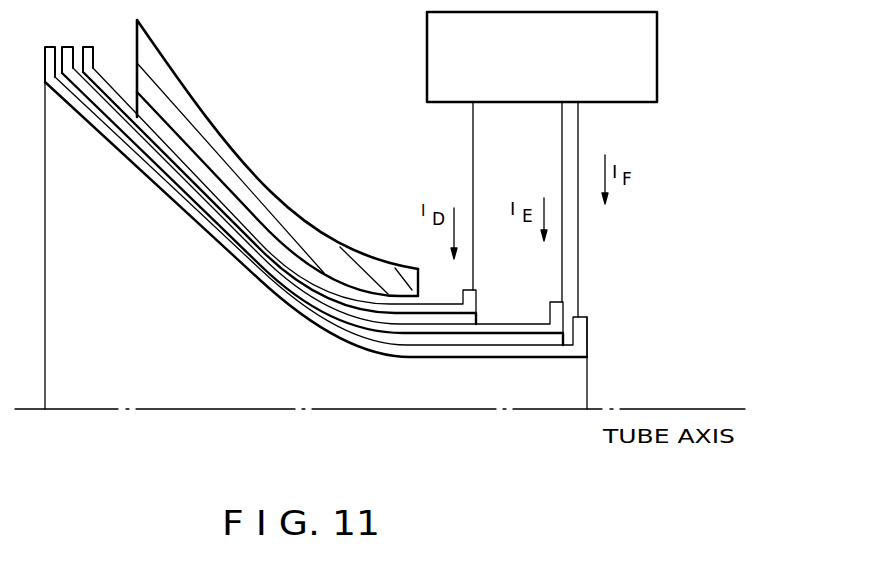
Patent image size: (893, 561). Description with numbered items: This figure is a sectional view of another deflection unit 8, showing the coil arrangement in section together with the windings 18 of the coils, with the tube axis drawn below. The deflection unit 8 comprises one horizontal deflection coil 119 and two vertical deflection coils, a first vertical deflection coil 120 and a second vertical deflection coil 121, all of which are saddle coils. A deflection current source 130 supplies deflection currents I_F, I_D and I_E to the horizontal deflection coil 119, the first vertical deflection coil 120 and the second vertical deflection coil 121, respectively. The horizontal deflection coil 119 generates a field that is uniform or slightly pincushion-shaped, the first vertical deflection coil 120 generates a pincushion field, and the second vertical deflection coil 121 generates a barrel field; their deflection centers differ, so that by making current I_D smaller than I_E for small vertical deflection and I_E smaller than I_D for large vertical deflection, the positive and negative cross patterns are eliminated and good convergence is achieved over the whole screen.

The deflection unit 8 is at (256, 88).
The deflection coil winding 18 is at (278, 211).
The deflection current source 130 is at (427, 58).
The second vertical deflection coil 121 is at (463, 290).
The first vertical deflection coil 120 is at (557, 302).
The horizontal deflection coil 119 is at (585, 317).